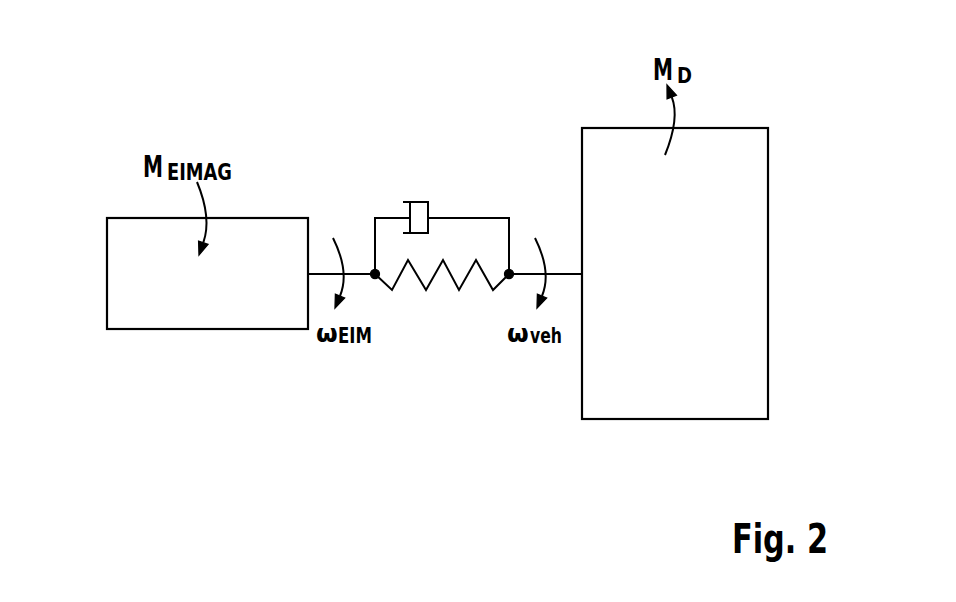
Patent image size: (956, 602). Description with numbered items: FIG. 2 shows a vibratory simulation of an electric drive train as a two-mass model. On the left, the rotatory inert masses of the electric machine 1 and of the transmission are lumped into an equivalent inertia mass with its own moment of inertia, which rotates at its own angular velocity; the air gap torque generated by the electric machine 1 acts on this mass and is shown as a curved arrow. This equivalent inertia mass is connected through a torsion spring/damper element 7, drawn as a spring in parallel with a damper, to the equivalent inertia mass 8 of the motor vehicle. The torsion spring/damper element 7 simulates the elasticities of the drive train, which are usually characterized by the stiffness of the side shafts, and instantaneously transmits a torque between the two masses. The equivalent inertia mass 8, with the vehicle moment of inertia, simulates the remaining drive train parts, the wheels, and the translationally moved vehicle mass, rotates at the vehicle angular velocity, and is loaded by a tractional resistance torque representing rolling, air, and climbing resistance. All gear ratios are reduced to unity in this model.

The electric machine 1 is at (107, 272).
The torsion spring/damper element 7 is at (459, 291).
The equivalent inertia mass of the motor vehicle 8 is at (768, 273).